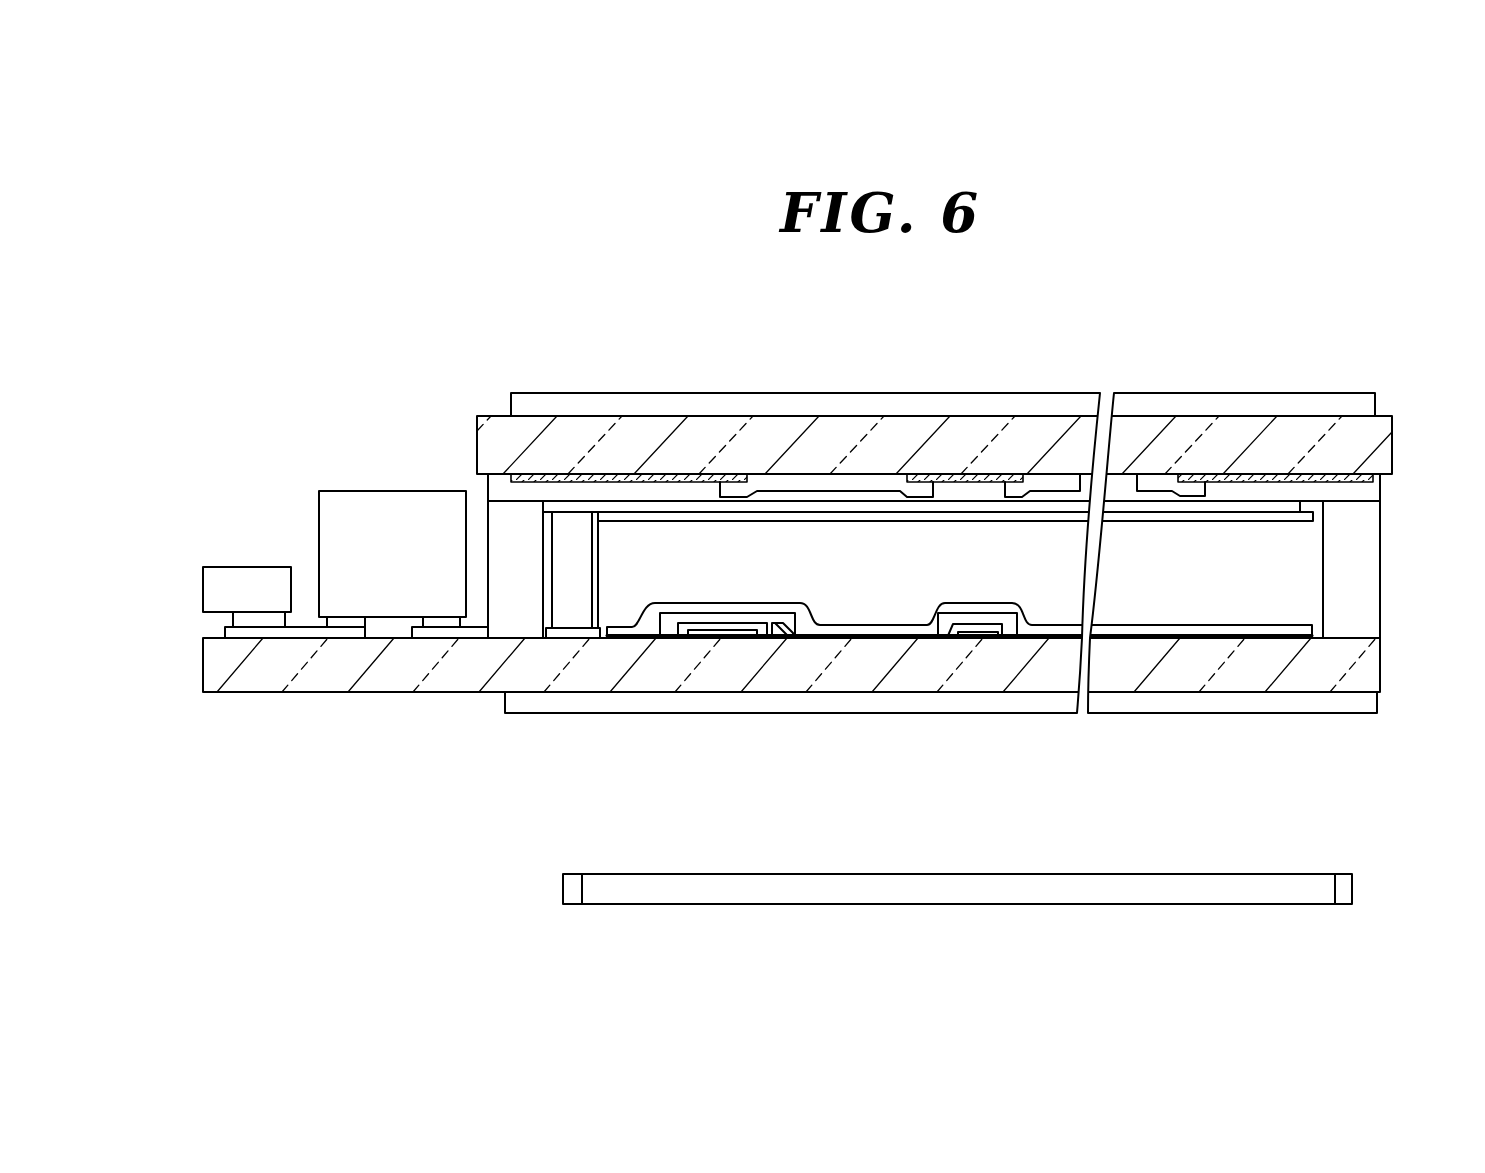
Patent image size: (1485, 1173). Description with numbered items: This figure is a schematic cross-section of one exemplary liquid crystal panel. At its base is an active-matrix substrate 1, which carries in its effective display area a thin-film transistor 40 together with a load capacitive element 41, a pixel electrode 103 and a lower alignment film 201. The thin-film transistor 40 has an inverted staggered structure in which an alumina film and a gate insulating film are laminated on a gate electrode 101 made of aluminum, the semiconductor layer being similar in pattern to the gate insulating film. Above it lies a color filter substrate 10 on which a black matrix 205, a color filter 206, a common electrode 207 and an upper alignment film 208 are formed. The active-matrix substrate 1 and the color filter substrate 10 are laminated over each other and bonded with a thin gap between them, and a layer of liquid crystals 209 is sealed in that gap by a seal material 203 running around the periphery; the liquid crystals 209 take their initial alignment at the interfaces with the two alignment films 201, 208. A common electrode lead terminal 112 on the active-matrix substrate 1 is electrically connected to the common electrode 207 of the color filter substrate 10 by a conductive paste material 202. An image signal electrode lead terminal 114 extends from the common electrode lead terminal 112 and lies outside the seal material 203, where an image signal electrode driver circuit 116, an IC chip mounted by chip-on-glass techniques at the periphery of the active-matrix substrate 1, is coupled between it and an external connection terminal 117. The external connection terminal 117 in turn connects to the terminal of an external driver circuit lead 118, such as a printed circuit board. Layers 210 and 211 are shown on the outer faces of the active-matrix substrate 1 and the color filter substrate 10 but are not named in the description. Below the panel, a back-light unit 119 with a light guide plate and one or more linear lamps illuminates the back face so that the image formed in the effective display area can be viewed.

The active-matrix substrate 1 is at (1369, 666).
The color filter substrate 10 is at (1304, 432).
The thin-film transistor 40 is at (727, 656).
The load capacitive element 41 is at (984, 598).
The gate electrode 101 is at (705, 636).
The pixel electrode 103 is at (825, 640).
The common electrode lead terminal 112 is at (570, 636).
The image signal electrode lead terminal 114 is at (420, 638).
The image signal electrode driver circuit 116 is at (363, 498).
The external connection terminal 117 is at (258, 638).
The external driver circuit lead 118 is at (230, 574).
The back-light unit 119 is at (1202, 868).
The alignment film 201 is at (892, 638).
The conductive paste material 202 is at (560, 588).
The seal material 203 is at (495, 597).
The black matrix 205 is at (948, 478).
The color filter 206 is at (873, 488).
The common electrode 207 is at (692, 507).
The alignment film 208 is at (622, 512).
The liquid crystals 209 is at (1299, 558).
The lower polarizer 210 is at (1340, 701).
The upper polarizer 211 is at (1260, 400).